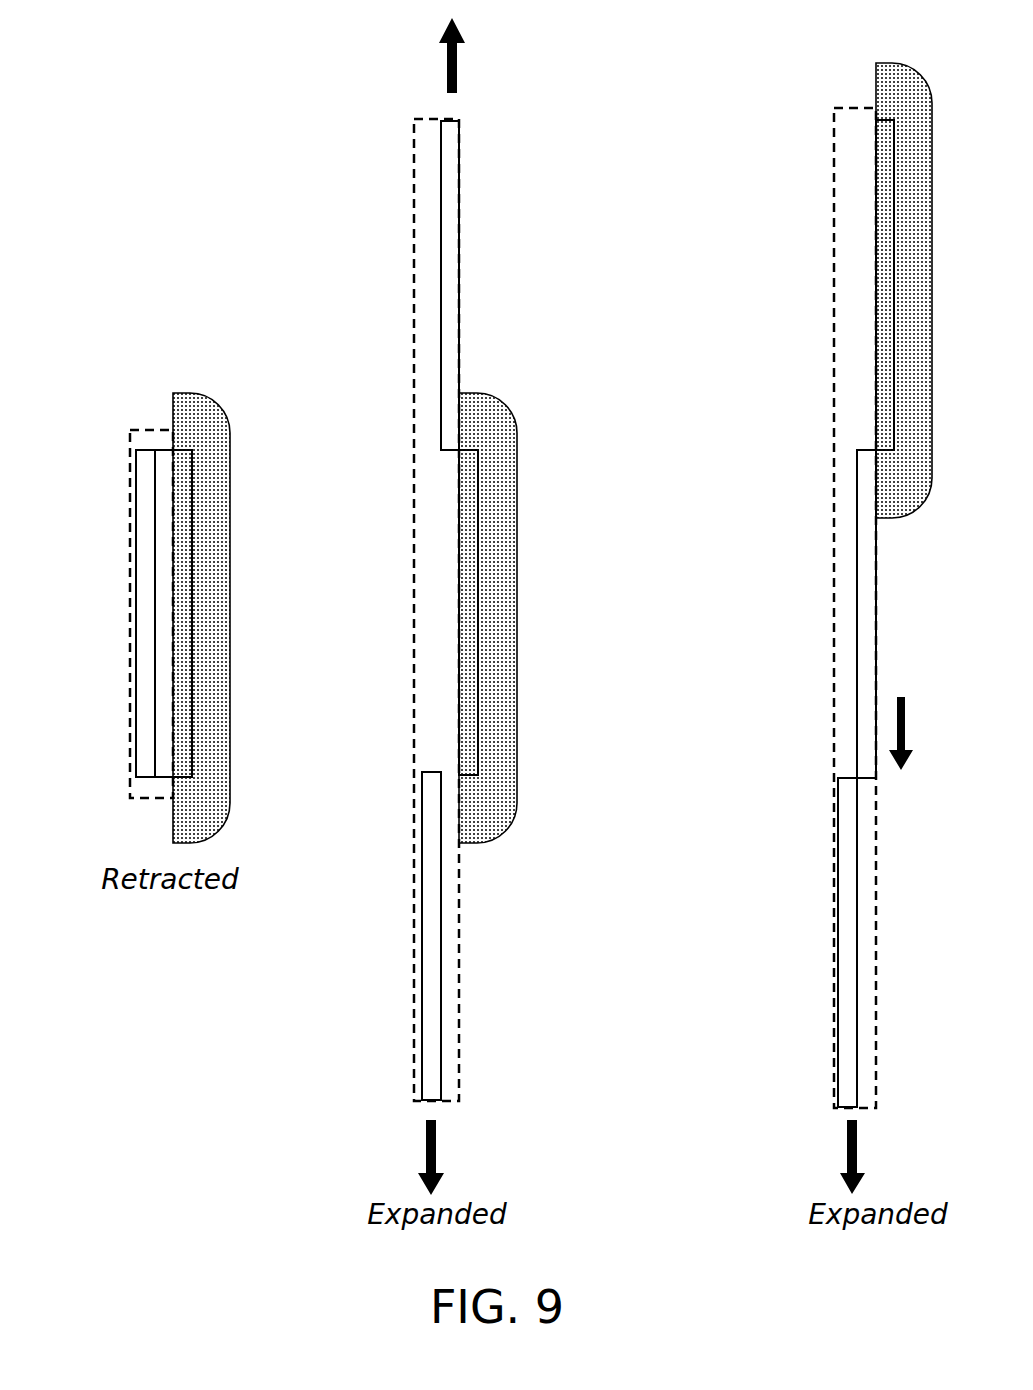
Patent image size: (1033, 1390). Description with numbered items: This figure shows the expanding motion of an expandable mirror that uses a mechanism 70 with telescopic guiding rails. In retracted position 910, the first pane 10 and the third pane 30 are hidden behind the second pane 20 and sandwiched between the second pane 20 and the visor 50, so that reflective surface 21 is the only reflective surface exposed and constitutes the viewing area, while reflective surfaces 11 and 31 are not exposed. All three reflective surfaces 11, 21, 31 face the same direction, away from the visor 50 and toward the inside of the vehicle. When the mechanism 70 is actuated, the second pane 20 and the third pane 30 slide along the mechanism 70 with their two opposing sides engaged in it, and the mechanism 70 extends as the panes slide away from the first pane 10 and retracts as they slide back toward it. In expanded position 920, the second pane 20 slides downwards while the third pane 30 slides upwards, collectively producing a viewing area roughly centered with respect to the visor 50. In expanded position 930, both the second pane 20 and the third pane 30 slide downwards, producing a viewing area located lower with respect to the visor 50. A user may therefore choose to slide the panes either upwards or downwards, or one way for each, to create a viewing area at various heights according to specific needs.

The retracted position 910 is at (122, 322).
The expanded position 920 is at (375, 92).
The expanded position 930 is at (838, 62).
The first pane 10 is at (515, 448).
The reflective surface 11 is at (459, 578).
The second pane 20 is at (497, 778).
The reflective surface 21 is at (421, 999).
The third pane 30 is at (515, 449).
The reflective surface 31 is at (439, 198).
The visor 50 is at (196, 614).
The mechanism 70 is at (129, 465).